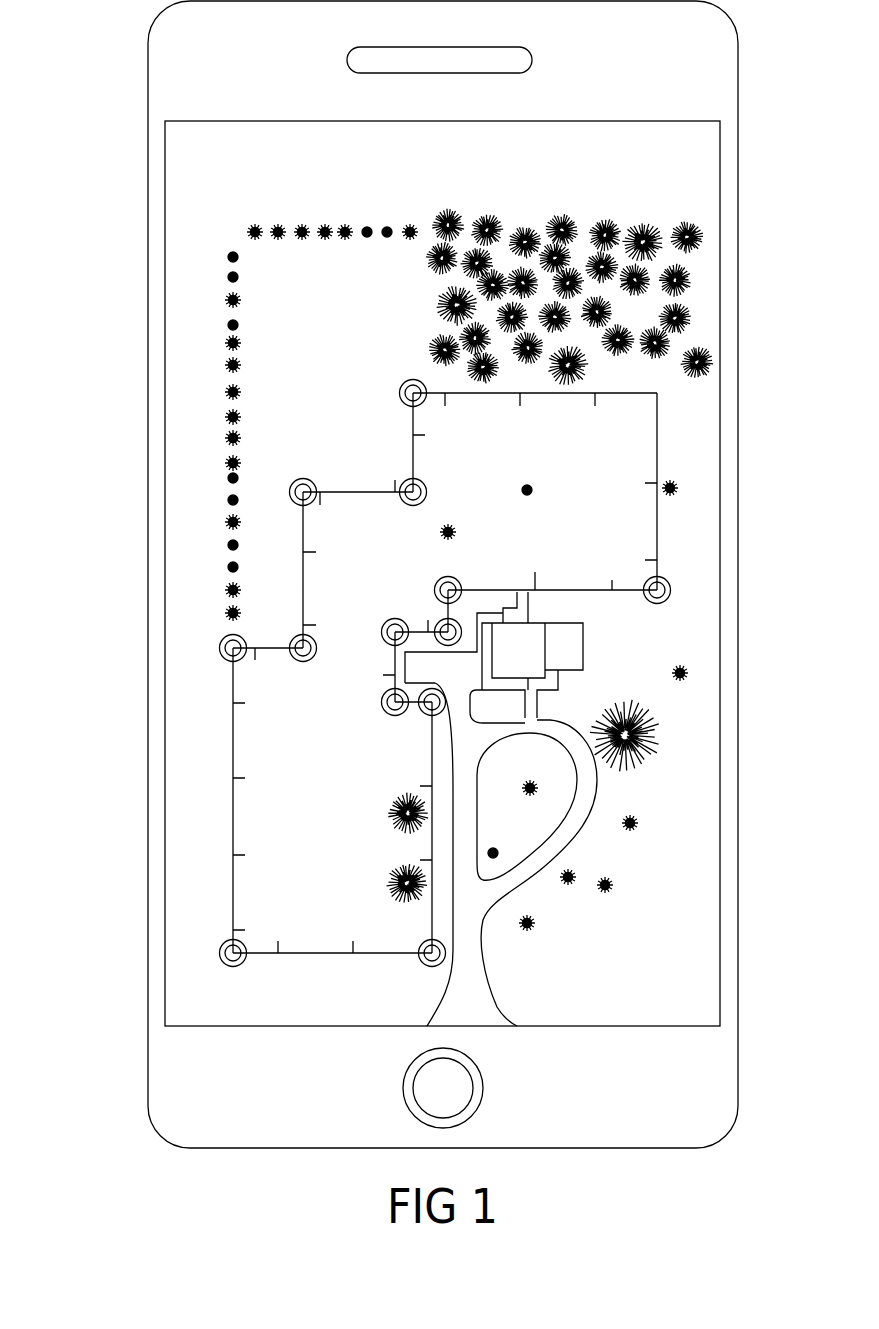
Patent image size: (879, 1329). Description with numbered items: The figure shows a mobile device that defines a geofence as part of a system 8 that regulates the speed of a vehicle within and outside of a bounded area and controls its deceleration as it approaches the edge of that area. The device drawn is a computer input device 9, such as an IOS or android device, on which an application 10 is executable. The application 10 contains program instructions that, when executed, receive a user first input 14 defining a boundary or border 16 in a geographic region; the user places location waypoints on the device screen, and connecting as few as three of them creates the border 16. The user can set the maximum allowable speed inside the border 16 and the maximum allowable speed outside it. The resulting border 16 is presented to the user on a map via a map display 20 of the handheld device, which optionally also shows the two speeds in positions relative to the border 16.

The system 8 is at (52, 259).
The computer input device 9 is at (133, 380).
The application 10 is at (707, 340).
The user first input 14 is at (722, 462).
The border 16 is at (675, 600).
The map display 20 is at (165, 575).